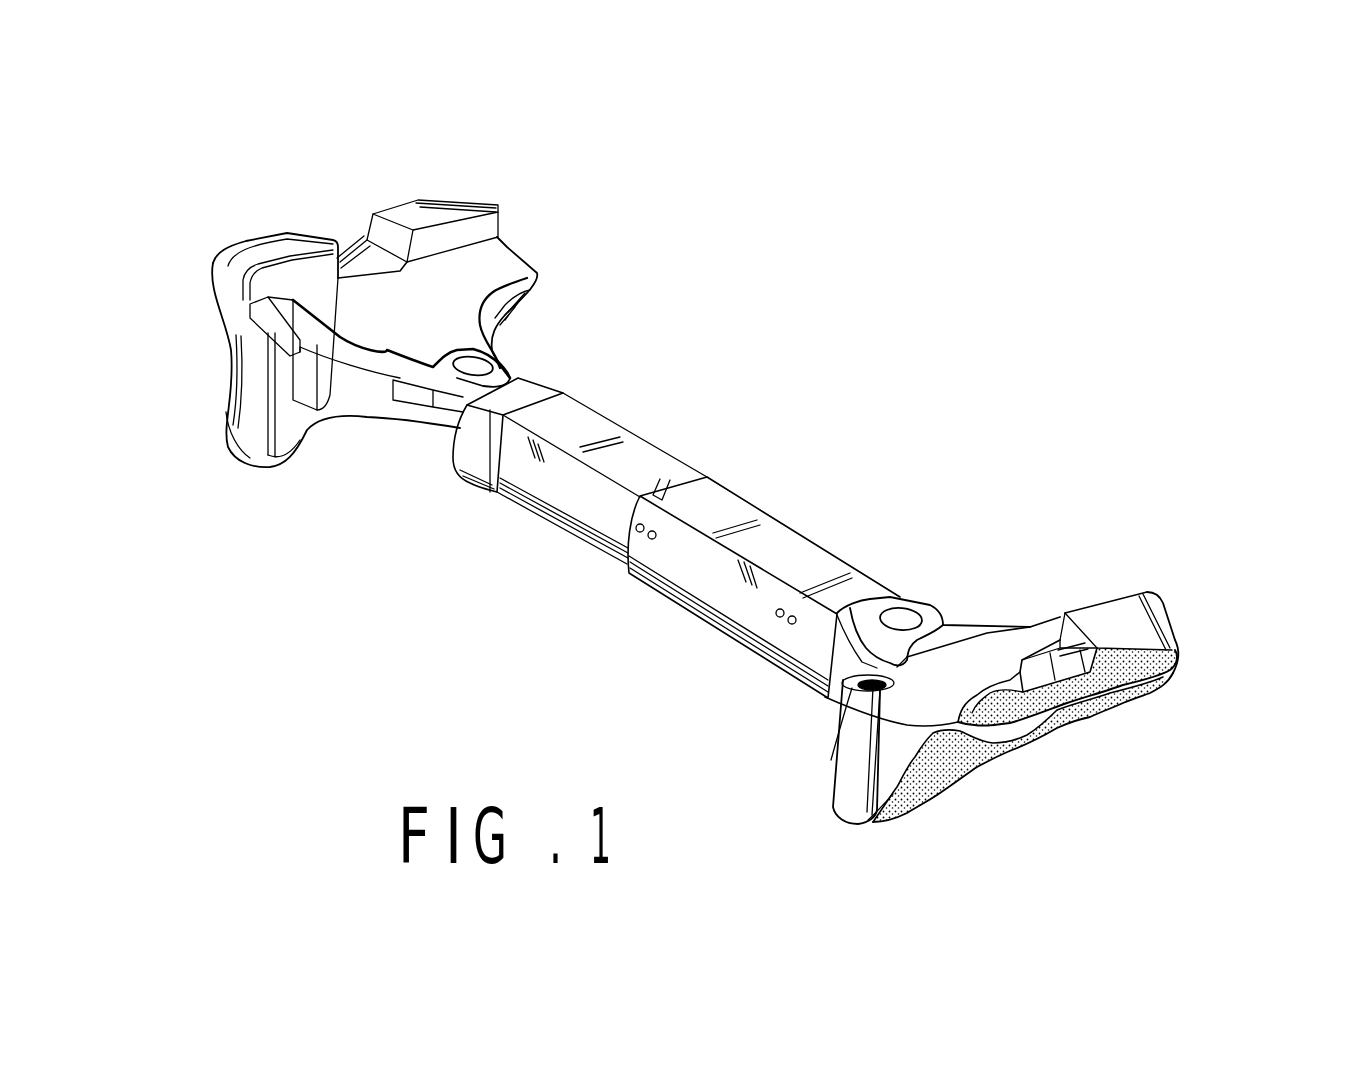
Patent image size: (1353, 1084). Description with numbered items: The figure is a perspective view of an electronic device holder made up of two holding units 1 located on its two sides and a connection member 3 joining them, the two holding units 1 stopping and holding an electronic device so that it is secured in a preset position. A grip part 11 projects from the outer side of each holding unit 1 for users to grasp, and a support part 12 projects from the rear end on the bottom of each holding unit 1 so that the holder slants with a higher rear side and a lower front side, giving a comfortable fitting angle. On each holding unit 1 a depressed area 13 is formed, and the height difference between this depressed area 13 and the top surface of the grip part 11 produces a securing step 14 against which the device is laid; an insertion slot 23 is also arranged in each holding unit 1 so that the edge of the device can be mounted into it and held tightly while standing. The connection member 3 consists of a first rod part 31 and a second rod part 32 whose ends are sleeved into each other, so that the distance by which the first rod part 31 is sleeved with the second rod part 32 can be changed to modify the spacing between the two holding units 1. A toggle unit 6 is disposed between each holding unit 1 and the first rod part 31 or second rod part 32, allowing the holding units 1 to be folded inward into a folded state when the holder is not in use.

The holding unit 1 is at (408, 186).
The connection member 3 is at (720, 478).
The toggle unit 6 is at (506, 361).
The grip part 11 is at (222, 268).
The support part 12 is at (256, 454).
The depressed area 13 is at (497, 258).
The securing step 14 is at (468, 228).
The insertion slot 23 is at (316, 373).
The first rod part 31 is at (578, 493).
The second rod part 32 is at (703, 594).